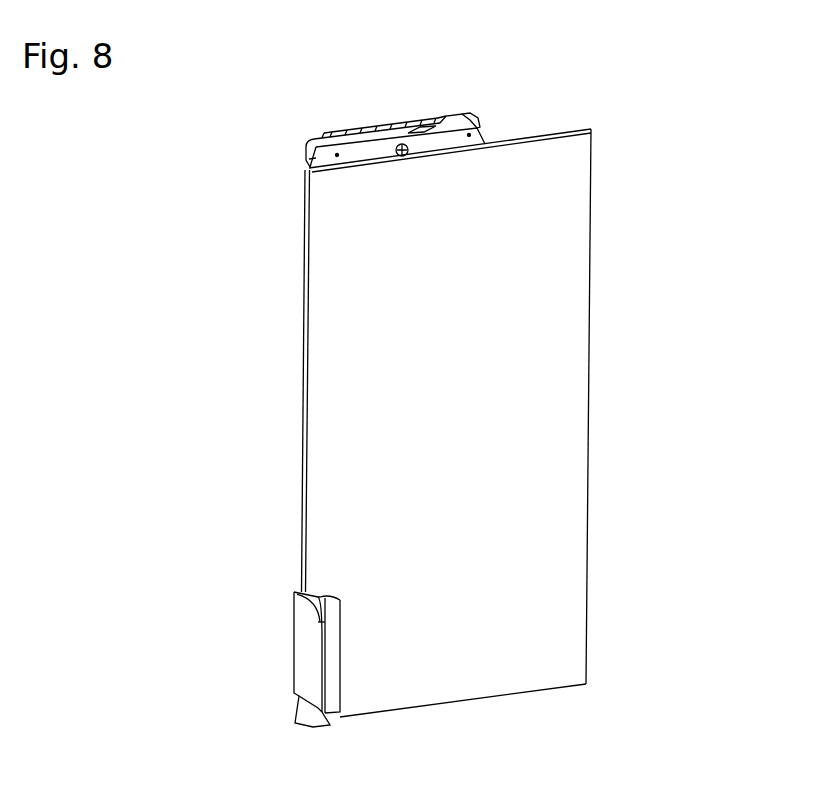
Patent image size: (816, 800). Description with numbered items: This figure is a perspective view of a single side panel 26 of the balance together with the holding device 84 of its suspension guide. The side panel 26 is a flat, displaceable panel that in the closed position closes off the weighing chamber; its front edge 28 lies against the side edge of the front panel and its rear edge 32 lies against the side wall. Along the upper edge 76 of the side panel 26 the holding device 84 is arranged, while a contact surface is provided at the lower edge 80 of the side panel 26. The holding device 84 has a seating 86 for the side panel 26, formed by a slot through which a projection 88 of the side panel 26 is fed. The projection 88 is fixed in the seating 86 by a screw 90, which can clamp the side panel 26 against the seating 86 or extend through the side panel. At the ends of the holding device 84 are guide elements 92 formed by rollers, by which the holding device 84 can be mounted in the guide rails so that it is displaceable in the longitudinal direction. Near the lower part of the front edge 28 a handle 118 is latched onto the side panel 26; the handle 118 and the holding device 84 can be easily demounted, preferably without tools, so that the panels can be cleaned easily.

The side panel 26 is at (443, 421).
The front edge 28 is at (301, 510).
The rear edge 32 is at (588, 514).
The upper edge 76 is at (543, 140).
The lower edge 80 is at (468, 703).
The holding device 84 is at (456, 142).
The seating 86 is at (358, 140).
The projection 88 is at (423, 131).
The screw 90 is at (404, 158).
The guide elements 92 is at (308, 142).
The handle 118 is at (332, 630).